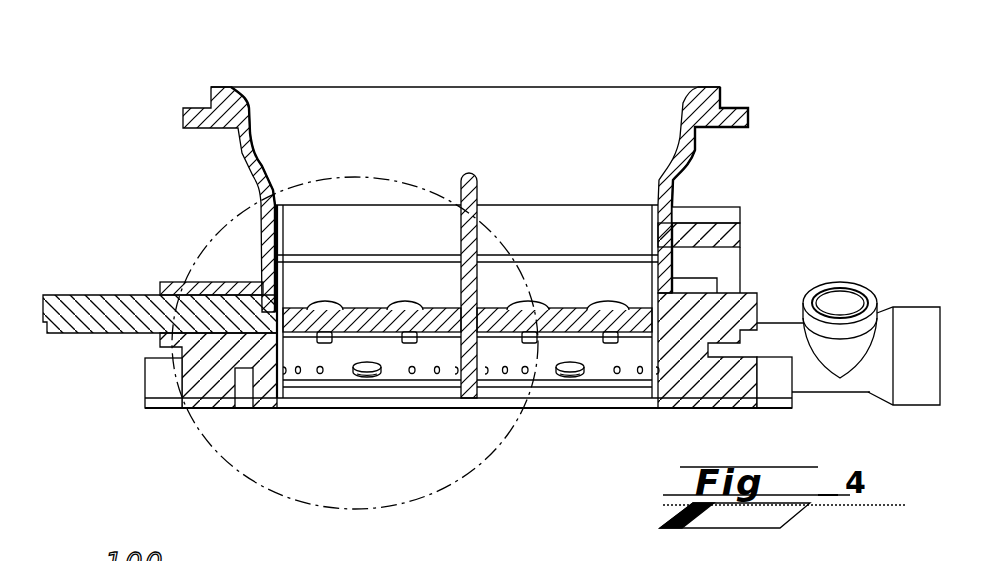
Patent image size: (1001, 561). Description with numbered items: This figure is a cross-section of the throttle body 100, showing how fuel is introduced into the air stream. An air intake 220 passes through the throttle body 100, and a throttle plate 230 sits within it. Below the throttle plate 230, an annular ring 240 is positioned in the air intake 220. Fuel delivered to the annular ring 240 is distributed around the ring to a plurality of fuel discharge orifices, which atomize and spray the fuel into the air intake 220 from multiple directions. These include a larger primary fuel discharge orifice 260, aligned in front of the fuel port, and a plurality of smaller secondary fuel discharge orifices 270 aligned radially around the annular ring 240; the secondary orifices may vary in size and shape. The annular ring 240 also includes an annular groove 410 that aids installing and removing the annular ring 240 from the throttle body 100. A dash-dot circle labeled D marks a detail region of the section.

The throttle body 100 is at (846, 166).
The air intake 220 is at (357, 208).
The throttle plate 230 is at (270, 198).
The annular ring 240 is at (316, 412).
The primary fuel discharge orifice 260 is at (362, 398).
The secondary fuel discharge orifices 270 is at (320, 366).
The annular groove 410 is at (449, 402).
The detail region D is at (505, 444).